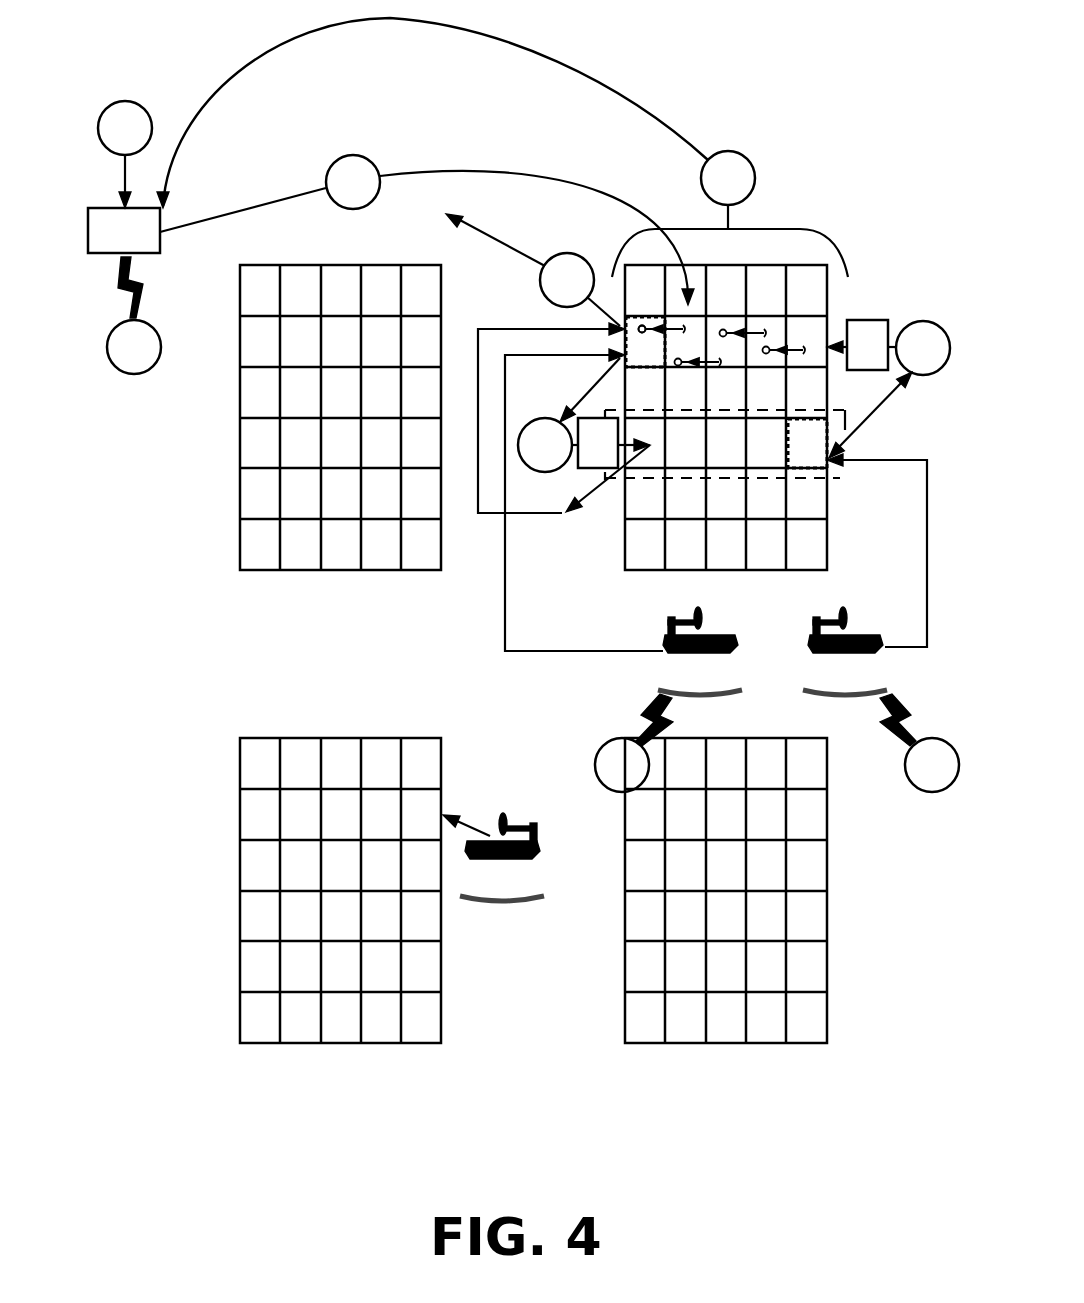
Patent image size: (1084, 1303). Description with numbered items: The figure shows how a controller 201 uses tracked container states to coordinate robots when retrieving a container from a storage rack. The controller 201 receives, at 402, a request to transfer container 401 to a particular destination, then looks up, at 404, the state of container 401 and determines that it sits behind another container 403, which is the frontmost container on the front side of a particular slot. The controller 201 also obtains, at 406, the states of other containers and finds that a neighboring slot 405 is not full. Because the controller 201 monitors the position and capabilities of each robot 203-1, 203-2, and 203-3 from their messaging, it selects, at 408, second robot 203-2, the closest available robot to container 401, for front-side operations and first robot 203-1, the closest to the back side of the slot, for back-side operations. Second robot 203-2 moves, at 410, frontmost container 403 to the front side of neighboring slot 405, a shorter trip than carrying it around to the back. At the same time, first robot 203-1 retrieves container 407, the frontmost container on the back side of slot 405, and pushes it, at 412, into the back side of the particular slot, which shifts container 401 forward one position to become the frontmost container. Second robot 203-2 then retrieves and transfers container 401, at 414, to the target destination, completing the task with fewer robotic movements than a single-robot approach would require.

The controller 201 is at (124, 230).
The receiving a request 402 is at (128, 101).
The looking up the state of the container 404 is at (353, 155).
The obtaining the state of other containers 406 is at (728, 151).
The selecting robots 408 is at (153, 416).
The moving the frontmost container 410 is at (548, 445).
The pushing the container 412 is at (919, 348).
The retrieving and transferring the container 414 is at (533, 270).
The container 401 is at (670, 341).
The container 403 is at (621, 392).
The neighboring slot 405 is at (832, 479).
The container 407 is at (838, 394).
The first robot 203-1 is at (845, 651).
The second robot 203-2 is at (700, 651).
The robot 203-3 is at (493, 857).